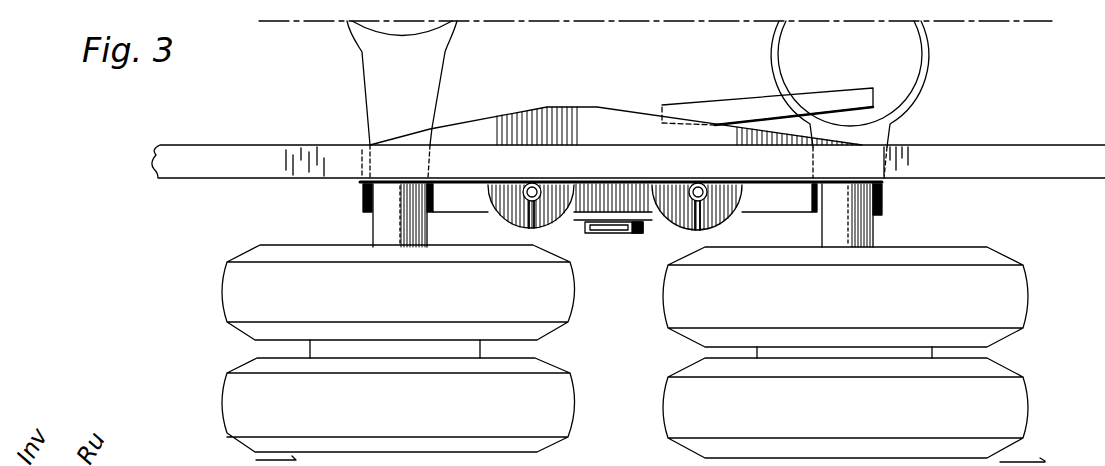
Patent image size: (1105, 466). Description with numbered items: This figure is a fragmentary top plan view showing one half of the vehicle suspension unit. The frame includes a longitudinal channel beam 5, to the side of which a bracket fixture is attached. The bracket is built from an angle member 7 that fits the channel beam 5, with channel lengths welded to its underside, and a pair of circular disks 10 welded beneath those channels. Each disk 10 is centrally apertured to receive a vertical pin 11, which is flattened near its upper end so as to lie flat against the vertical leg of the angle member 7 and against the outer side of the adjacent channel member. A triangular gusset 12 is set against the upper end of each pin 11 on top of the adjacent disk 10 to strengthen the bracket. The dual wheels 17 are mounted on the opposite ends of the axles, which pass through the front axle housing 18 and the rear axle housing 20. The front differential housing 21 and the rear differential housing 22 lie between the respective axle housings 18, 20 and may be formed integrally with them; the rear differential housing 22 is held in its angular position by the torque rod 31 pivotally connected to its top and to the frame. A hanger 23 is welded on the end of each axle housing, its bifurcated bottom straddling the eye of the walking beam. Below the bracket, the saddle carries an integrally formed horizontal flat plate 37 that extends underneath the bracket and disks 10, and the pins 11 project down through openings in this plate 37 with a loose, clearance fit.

The longitudinal channel beam 5 is at (1025, 162).
The angle member 7 is at (610, 183).
The circular disk 10 is at (502, 217).
The vertical pin 11 is at (530, 184).
The triangular gusset 12 is at (532, 228).
The dual wheels 17 is at (565, 328).
The front axle housing 18 is at (380, 234).
The rear axle housing 20 is at (868, 238).
The front differential housing 21 is at (447, 27).
The rear differential housing 22 is at (923, 78).
The hanger 23 is at (883, 206).
The torque rod 31 is at (751, 98).
The horizontal flat plate 37 is at (613, 208).